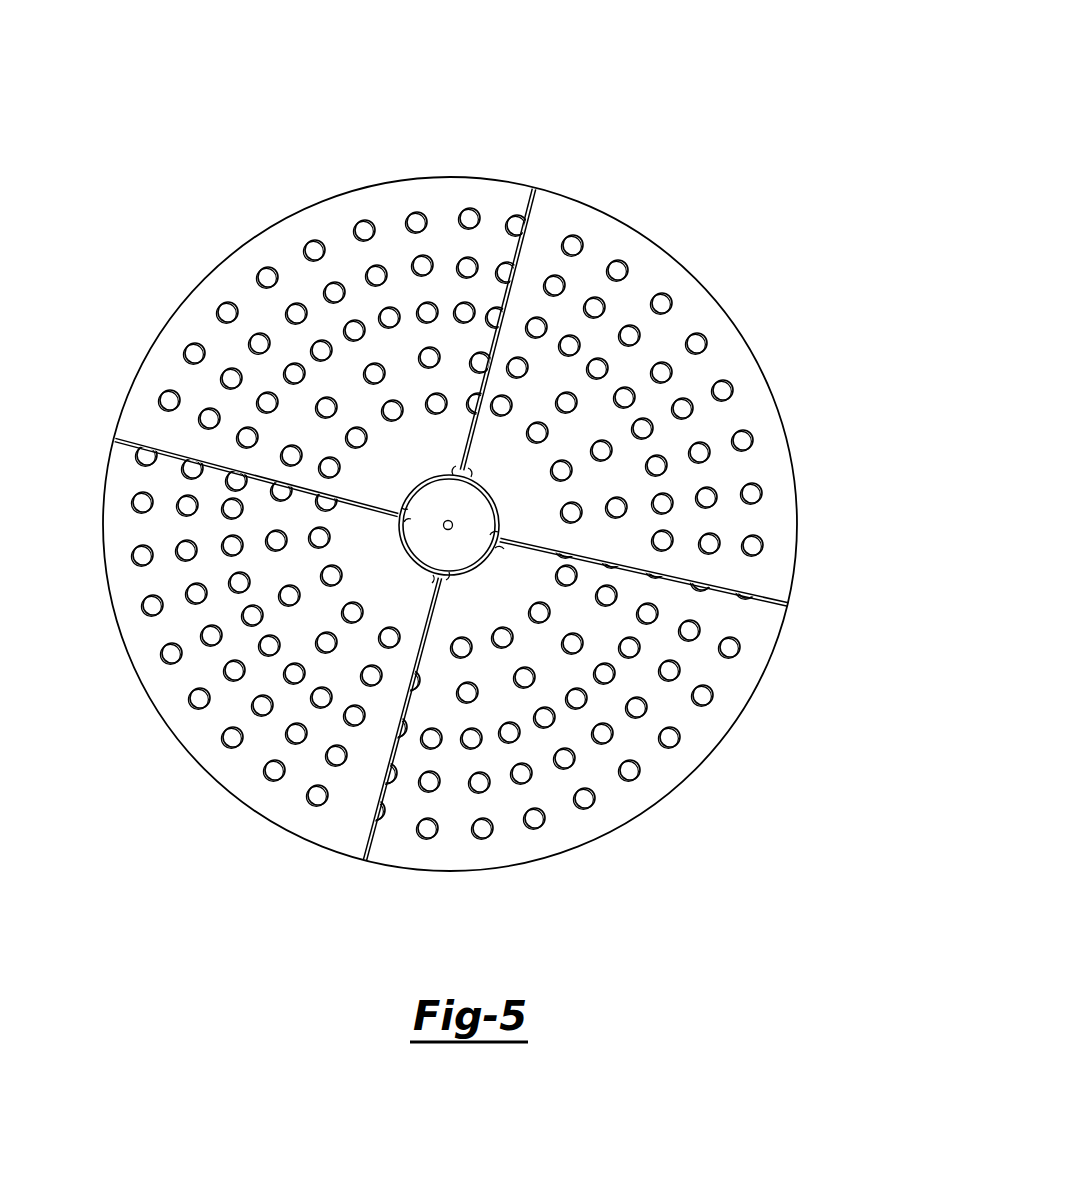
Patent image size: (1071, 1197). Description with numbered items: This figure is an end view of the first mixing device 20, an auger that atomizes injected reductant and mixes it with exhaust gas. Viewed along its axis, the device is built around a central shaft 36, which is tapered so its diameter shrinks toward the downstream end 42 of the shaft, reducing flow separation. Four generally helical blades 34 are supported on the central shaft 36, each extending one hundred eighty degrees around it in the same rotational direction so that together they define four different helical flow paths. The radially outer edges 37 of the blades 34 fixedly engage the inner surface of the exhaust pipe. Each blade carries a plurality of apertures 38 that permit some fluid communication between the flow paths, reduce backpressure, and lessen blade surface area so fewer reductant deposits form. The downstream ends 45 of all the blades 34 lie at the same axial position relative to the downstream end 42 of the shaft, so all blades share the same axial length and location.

The first mixing device 20 is at (636, 73).
The helical blades 34 is at (663, 275).
The central shaft 36 is at (423, 532).
The radially outer edges 37 is at (541, 185).
The apertures 38 is at (365, 228).
The downstream end 42 is at (478, 517).
The downstream ends 45 is at (380, 508).